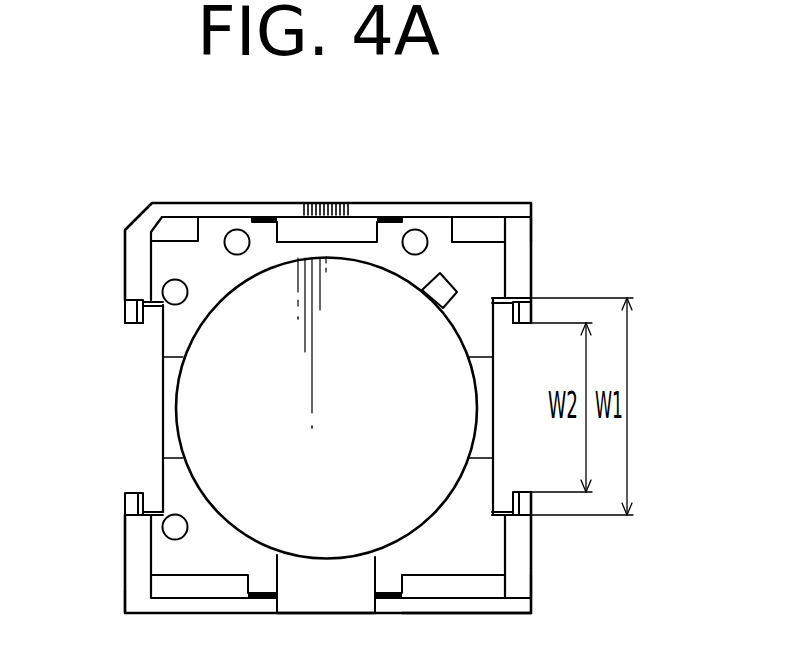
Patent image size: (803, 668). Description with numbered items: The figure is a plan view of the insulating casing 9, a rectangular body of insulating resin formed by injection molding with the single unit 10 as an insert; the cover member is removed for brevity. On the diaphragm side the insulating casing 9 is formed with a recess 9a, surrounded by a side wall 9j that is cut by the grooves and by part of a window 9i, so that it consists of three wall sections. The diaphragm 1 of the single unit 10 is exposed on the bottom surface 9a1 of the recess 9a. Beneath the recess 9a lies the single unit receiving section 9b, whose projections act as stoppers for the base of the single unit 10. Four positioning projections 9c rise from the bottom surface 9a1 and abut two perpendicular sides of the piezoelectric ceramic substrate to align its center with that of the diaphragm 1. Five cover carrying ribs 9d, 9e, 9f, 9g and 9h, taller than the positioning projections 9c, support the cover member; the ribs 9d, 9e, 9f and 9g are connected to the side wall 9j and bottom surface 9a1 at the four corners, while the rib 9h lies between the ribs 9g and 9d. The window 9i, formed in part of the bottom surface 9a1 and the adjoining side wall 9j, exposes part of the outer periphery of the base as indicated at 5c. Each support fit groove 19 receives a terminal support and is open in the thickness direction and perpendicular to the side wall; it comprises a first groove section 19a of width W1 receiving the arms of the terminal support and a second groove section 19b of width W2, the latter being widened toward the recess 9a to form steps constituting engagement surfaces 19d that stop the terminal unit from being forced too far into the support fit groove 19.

The diaphragm 1 is at (232, 375).
The exposed part of outer periphery of base 5c is at (333, 560).
The insulating casing 9 is at (452, 202).
The recess 9a is at (483, 545).
The bottom surface of recess 9a1 is at (387, 255).
The single unit receiving section 9b is at (468, 473).
The positioning projections 9c is at (176, 288).
The cover carrying rib 9d is at (483, 225).
The cover carrying rib 9e is at (475, 587).
The cover carrying rib 9f is at (202, 594).
The cover carrying rib 9g is at (163, 230).
The cover carrying rib 9h is at (304, 216).
The window 9i is at (278, 578).
The side wall 9j is at (520, 226).
The single unit 10 is at (428, 372).
The support fit groove 19 is at (138, 432).
The first groove section 19a is at (503, 313).
The second groove section 19b is at (133, 327).
The engagement surface 19d is at (125, 313).